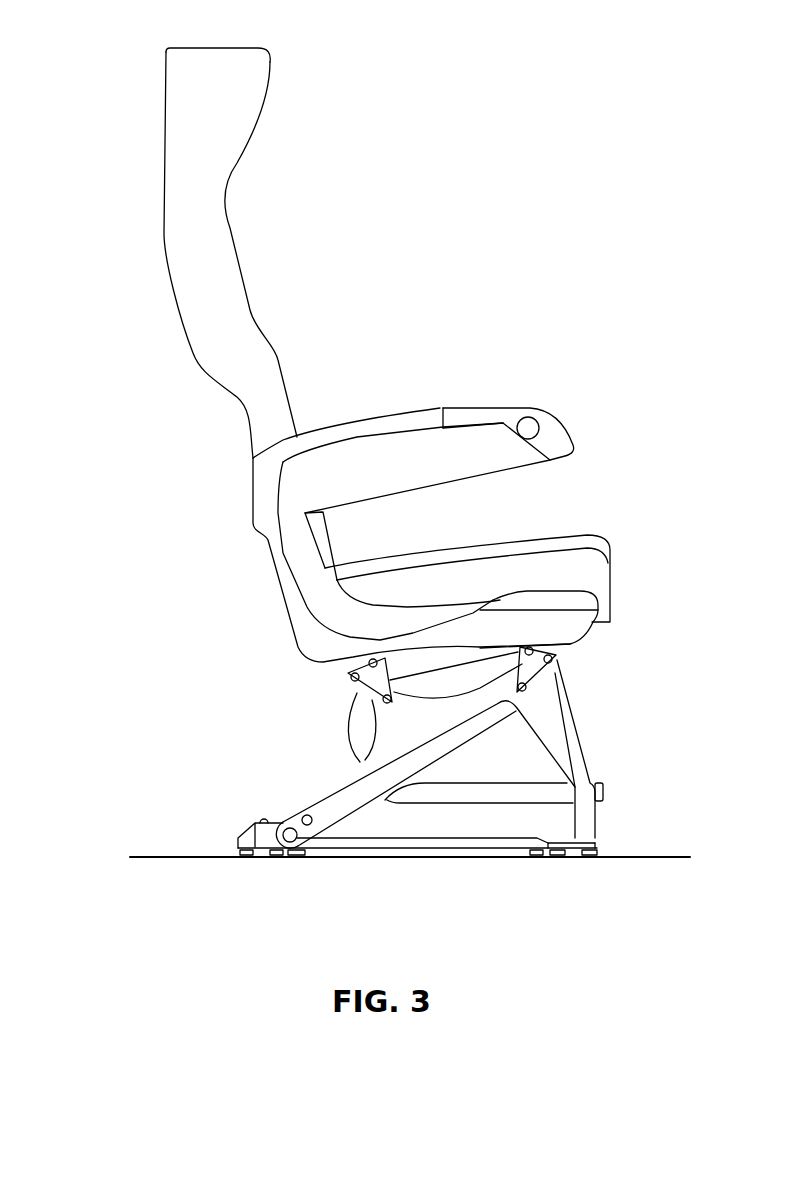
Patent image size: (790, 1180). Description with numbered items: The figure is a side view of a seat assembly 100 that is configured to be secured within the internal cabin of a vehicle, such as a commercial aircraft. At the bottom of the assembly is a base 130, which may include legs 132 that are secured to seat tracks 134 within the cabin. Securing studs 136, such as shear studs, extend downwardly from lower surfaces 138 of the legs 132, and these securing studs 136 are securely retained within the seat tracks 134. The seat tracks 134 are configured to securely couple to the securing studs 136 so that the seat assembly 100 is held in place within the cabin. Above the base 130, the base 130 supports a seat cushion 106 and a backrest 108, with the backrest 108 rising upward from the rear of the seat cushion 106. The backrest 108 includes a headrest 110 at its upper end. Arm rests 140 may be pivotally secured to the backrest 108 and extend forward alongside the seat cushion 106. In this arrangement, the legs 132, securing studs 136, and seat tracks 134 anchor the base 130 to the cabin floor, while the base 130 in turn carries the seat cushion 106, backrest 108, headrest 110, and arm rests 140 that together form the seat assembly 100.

The seat assembly 100 is at (150, 54).
The seat cushion 106 is at (595, 533).
The backrest 108 is at (164, 185).
The headrest 110 is at (238, 162).
The base 130 is at (343, 767).
The legs 132 is at (238, 840).
The seat tracks 134 is at (315, 858).
The securing studs 136 is at (247, 858).
The lower surfaces 138 is at (255, 822).
The arm rests 140 is at (480, 407).